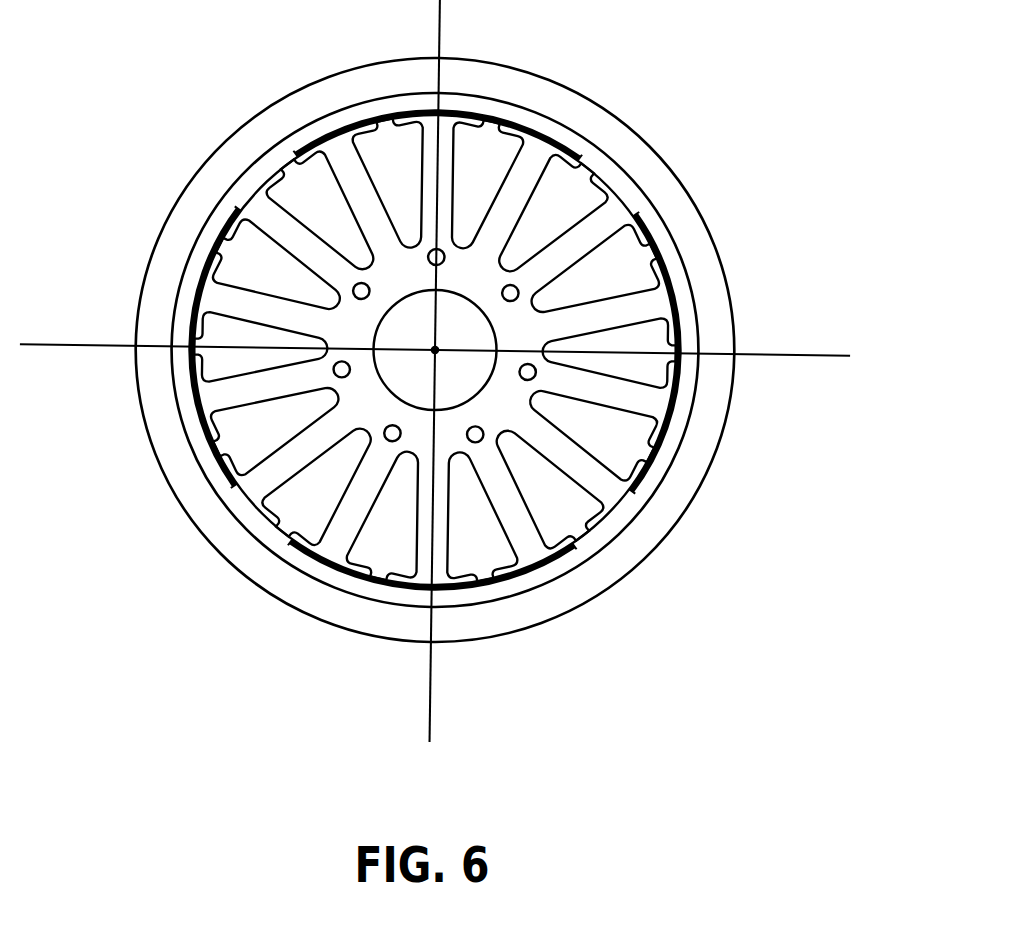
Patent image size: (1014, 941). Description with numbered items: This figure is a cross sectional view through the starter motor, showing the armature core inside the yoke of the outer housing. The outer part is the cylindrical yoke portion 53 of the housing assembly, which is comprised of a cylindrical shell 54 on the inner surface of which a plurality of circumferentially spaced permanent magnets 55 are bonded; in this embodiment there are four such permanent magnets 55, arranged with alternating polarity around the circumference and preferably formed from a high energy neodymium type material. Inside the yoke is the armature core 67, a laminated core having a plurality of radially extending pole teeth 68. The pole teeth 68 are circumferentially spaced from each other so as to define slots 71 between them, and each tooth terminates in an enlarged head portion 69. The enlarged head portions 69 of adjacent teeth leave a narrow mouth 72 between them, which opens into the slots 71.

The cylindrical yoke portion 53 is at (636, 26).
The cylindrical shell 54 is at (596, 118).
The permanent magnets 55 is at (590, 152).
The core 67 is at (252, 514).
The pole teeth 68 is at (627, 393).
The enlarged head portions 69 is at (212, 398).
The slots 71 is at (603, 273).
The narrow mouth 72 is at (383, 580).